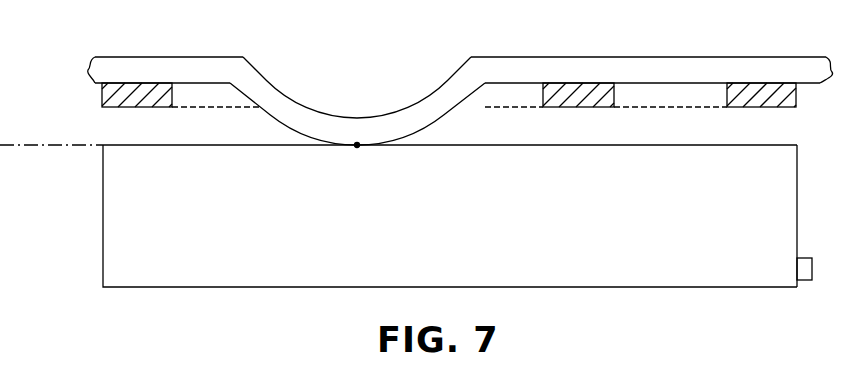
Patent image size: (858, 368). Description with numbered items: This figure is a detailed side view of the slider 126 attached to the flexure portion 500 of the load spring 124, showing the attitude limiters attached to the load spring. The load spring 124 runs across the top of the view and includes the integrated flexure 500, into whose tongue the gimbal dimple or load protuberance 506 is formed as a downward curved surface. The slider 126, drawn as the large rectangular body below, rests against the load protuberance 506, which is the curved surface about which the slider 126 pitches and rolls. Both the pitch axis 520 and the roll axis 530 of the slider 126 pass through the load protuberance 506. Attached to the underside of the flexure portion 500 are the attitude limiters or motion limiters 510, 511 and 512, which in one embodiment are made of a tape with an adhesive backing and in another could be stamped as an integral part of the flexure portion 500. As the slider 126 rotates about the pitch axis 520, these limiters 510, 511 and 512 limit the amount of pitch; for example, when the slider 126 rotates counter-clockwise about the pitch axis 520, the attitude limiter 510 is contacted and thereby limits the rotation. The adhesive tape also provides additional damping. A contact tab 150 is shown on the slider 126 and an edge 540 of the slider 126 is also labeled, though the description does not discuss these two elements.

The load spring 124 is at (722, 65).
The slider 126 is at (477, 235).
The contact tab 150 is at (812, 265).
The flexure 500 is at (438, 78).
The load protuberance 506 is at (268, 123).
The attitude limiter 510 is at (752, 107).
The attitude limiter 511 is at (565, 107).
The attitude limiter 512 is at (117, 108).
The pitch axis 520 is at (357, 148).
The roll axis 530 is at (66, 147).
The slider edge 540 is at (775, 147).